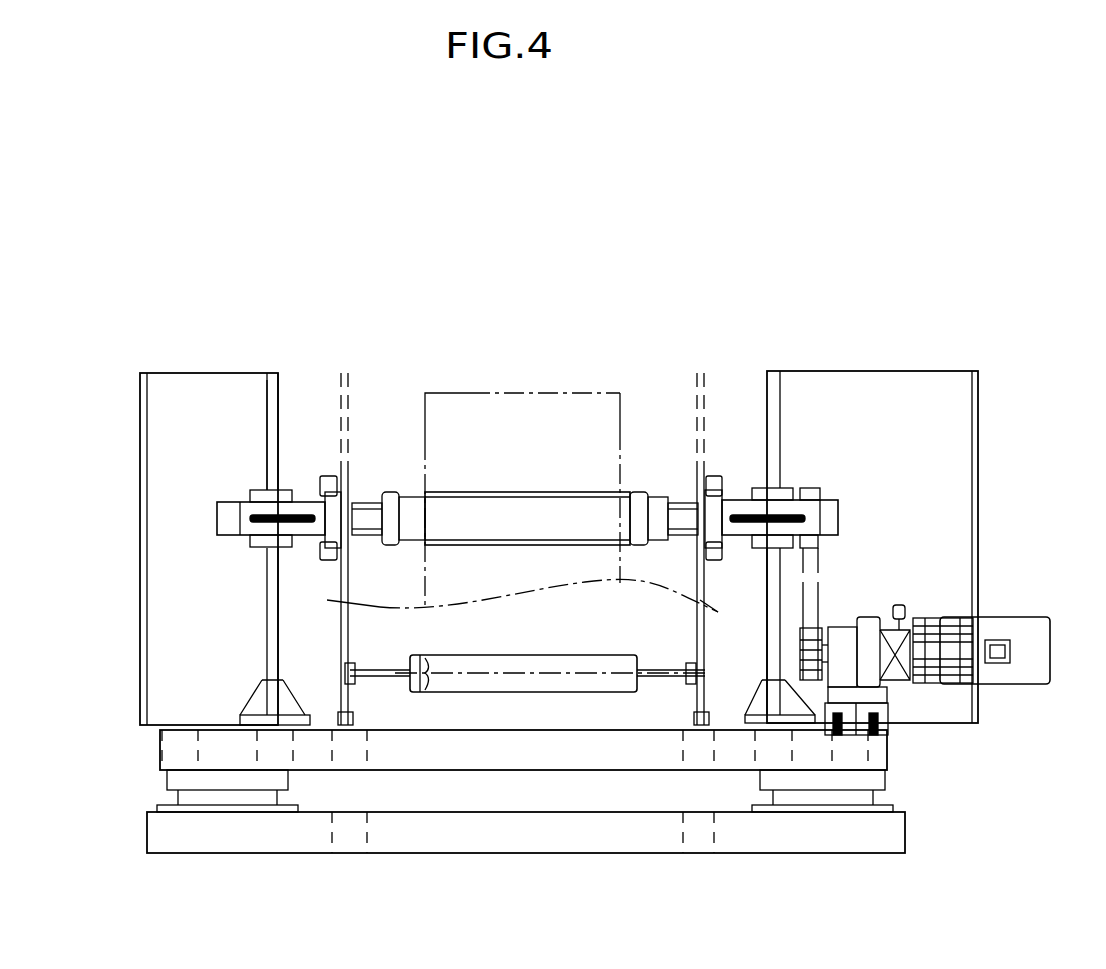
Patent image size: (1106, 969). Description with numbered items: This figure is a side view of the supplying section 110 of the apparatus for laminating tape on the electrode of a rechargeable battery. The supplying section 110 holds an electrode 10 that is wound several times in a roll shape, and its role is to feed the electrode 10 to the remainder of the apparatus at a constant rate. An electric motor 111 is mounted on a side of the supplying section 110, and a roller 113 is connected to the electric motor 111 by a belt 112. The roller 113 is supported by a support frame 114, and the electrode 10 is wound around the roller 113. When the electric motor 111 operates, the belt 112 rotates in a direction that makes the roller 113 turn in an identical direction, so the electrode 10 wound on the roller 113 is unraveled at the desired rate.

The supplying section 110 is at (755, 267).
The electric motor 111 is at (940, 620).
The belt 112 is at (815, 568).
The roller 113 is at (625, 492).
The support frame 114 is at (282, 400).
The electrode 10 is at (534, 392).